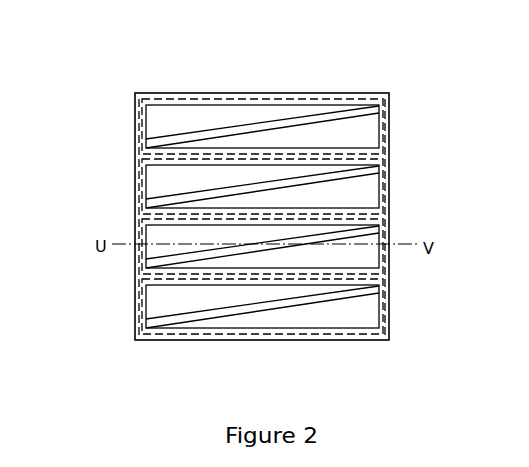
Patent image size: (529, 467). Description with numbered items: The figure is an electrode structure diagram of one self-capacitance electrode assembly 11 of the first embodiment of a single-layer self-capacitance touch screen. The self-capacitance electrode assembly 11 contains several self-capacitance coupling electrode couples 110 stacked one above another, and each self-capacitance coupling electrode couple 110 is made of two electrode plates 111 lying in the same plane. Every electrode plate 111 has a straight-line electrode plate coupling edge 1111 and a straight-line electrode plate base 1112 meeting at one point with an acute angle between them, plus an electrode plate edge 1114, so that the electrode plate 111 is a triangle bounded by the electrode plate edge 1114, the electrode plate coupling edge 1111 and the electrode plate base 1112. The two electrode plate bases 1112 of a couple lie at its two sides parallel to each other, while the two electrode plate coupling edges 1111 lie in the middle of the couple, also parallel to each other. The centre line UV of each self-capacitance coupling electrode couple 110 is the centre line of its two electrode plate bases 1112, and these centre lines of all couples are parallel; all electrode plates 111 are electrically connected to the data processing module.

The self-capacitance electrode assembly 11 is at (317, 340).
The self-capacitance coupling electrode couple 110 is at (377, 112).
The electrode plate 111 is at (178, 122).
The electrode plate coupling edge 1111 is at (237, 128).
The electrode plate base 1112 is at (328, 106).
The electrode plate edge 1114 is at (140, 124).